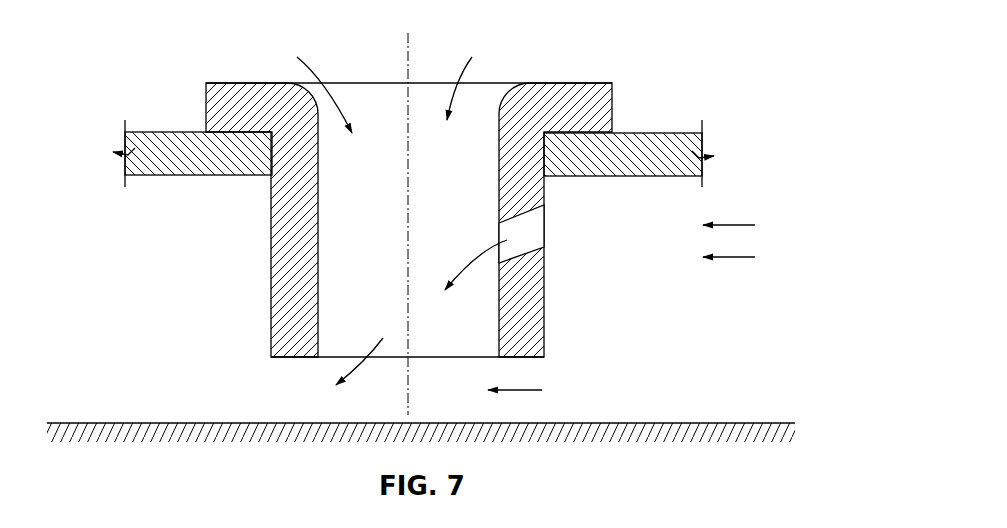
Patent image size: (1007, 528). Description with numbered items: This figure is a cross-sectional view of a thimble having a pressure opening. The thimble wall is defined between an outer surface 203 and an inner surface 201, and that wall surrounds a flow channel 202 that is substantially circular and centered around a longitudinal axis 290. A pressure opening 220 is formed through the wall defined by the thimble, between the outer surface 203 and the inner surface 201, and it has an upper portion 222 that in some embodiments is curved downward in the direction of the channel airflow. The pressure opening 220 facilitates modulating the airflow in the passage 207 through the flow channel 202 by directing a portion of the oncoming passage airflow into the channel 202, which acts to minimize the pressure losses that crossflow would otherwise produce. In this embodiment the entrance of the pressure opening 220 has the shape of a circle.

The inner surface 201 is at (517, 90).
The flow channel 202 is at (384, 234).
The outer surface 203 is at (270, 248).
The passage 207 is at (650, 402).
The pressure opening 220 is at (550, 240).
The upper portion 222 is at (532, 223).
The longitudinal axis 290 is at (405, 52).